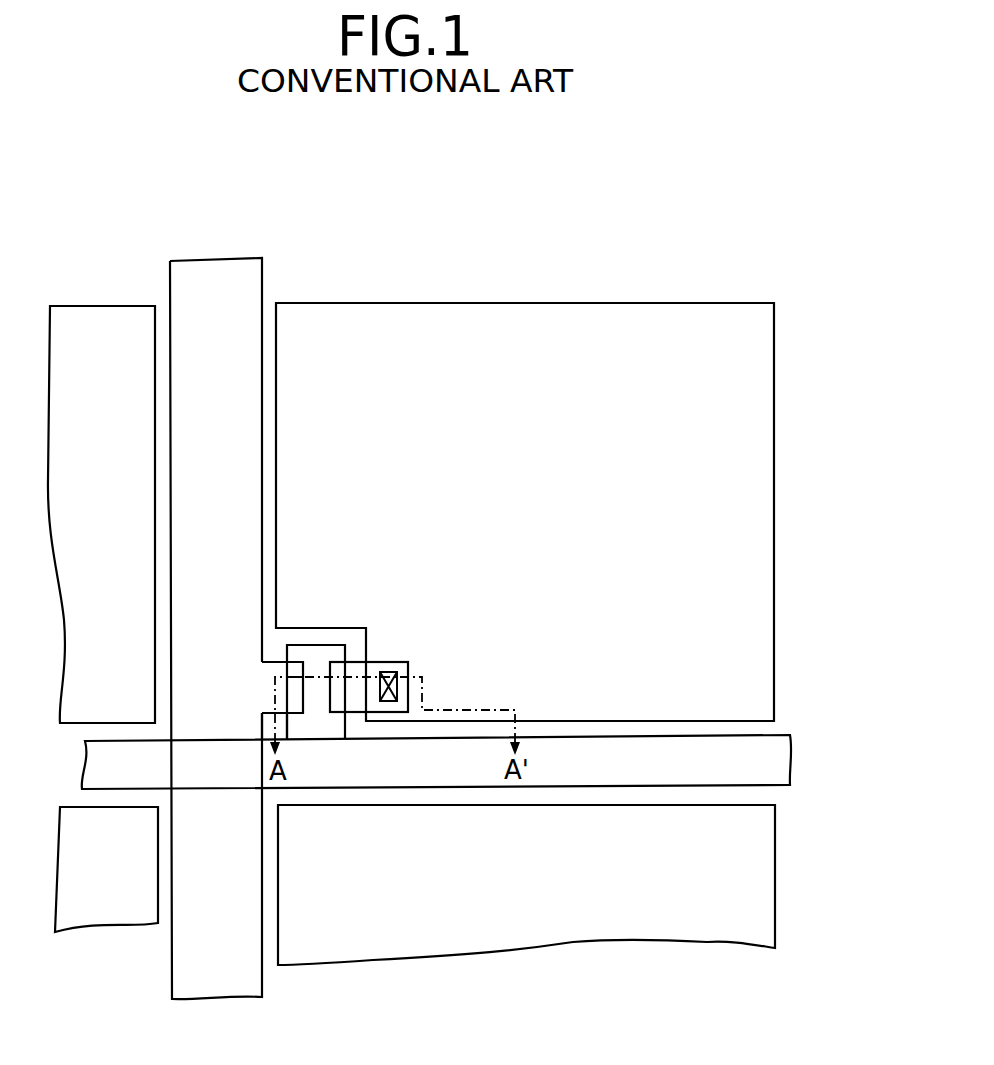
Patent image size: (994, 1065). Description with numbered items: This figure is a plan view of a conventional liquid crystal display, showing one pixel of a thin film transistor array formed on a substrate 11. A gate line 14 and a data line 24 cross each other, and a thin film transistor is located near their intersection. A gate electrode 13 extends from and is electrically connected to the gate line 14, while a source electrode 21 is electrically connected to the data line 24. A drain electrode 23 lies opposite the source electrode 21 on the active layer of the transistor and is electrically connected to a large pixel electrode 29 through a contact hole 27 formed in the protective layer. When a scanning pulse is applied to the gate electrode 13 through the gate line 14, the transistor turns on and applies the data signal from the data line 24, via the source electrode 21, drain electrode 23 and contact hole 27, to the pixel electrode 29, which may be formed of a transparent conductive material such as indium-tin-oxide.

The substrate 11 is at (683, 303).
The gate electrode 13 is at (325, 655).
The gate line 14 is at (792, 753).
The source electrode 21 is at (277, 667).
The drain electrode 23 is at (403, 660).
The data line 24 is at (223, 278).
The contact hole 27 is at (410, 679).
The pixel electrode 29 is at (768, 492).